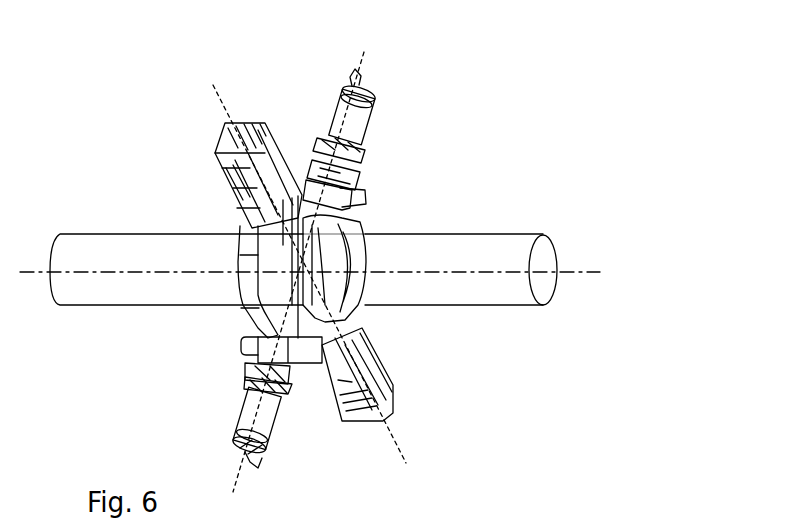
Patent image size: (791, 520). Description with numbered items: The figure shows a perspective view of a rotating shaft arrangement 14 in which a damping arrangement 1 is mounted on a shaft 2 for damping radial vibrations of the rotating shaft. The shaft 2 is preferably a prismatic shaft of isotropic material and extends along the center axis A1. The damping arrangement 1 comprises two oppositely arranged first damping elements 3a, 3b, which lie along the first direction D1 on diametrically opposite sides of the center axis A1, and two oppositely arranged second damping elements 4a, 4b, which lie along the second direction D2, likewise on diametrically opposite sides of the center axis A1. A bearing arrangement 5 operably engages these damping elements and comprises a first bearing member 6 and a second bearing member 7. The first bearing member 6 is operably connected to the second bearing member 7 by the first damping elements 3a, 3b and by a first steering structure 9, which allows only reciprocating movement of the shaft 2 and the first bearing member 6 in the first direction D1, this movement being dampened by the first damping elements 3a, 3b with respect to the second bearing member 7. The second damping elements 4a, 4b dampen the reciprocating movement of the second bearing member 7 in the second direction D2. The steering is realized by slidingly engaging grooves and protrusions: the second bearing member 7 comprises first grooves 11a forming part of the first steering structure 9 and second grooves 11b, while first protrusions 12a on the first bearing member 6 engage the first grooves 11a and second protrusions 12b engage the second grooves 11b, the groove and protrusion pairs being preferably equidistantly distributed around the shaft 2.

The damping arrangement 1 is at (210, 135).
The shaft 2 is at (462, 250).
The first damping element 3a is at (257, 190).
The first damping element 3b is at (345, 370).
The second damping element 4a is at (262, 398).
The second damping element 4b is at (360, 117).
The bearing arrangement 5 is at (385, 224).
The first bearing member 6 is at (316, 256).
The second bearing member 7 is at (277, 287).
The first steering structure 9 is at (235, 212).
The first groove 11a is at (388, 383).
The second groove 11b is at (358, 180).
The first protrusion 12a is at (404, 360).
The second protrusion 12b is at (367, 193).
The rotating shaft arrangement 14 is at (608, 77).
The center axis A1 is at (587, 273).
The first direction D1 is at (222, 98).
The second direction D2 is at (365, 63).